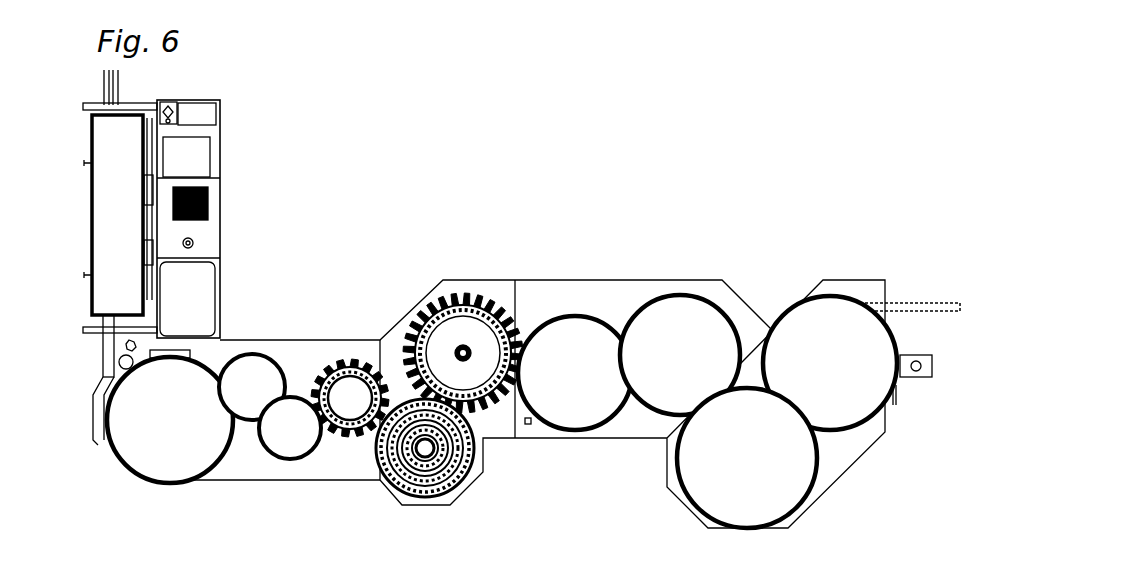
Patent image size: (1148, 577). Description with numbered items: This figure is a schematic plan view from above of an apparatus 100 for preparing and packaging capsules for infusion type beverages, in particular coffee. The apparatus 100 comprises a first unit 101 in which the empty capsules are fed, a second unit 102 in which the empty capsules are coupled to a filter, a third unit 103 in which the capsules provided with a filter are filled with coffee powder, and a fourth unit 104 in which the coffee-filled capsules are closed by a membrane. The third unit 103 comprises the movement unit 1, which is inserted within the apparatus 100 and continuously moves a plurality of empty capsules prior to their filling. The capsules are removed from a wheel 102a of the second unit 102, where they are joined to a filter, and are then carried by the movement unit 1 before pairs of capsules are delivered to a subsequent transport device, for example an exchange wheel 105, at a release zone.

The apparatus 100 is at (448, 192).
The first unit 101 is at (120, 207).
The second unit 102 is at (175, 452).
The wheel 102a is at (290, 458).
The third unit 103 is at (480, 490).
The fourth unit 104 is at (712, 490).
The exchange wheel 105 is at (494, 305).
The movement unit 1 is at (363, 450).